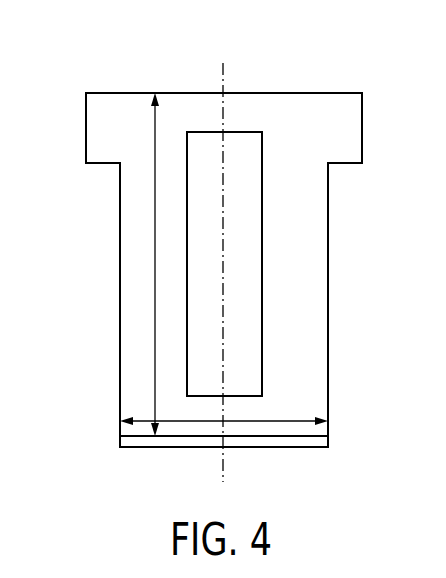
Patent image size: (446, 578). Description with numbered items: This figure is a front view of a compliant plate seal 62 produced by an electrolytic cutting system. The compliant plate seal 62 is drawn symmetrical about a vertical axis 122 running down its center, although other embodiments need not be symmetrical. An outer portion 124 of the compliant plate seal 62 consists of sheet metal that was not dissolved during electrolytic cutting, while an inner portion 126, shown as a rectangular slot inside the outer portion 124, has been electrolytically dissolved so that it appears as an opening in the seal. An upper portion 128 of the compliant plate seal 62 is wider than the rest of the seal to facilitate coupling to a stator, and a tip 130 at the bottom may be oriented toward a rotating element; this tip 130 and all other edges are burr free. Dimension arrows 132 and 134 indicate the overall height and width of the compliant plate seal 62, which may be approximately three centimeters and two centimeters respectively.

The compliant plate seal 62 is at (337, 61).
The axis 122 is at (224, 462).
The outer portion 124 is at (312, 290).
The inner portion 126 is at (210, 272).
The upper portion 128 is at (363, 128).
The tip 130 is at (140, 447).
The height dimension 132 is at (154, 237).
The width dimension 134 is at (298, 421).